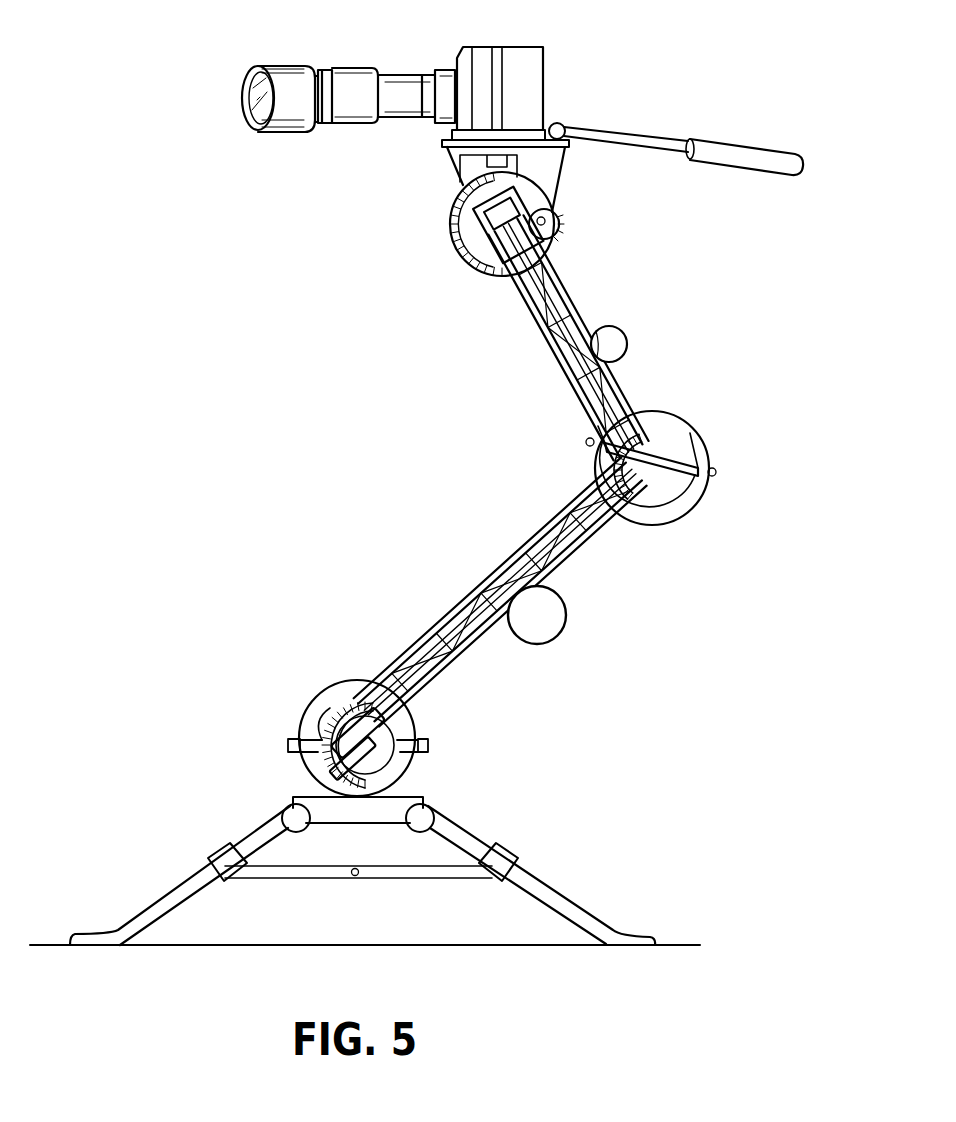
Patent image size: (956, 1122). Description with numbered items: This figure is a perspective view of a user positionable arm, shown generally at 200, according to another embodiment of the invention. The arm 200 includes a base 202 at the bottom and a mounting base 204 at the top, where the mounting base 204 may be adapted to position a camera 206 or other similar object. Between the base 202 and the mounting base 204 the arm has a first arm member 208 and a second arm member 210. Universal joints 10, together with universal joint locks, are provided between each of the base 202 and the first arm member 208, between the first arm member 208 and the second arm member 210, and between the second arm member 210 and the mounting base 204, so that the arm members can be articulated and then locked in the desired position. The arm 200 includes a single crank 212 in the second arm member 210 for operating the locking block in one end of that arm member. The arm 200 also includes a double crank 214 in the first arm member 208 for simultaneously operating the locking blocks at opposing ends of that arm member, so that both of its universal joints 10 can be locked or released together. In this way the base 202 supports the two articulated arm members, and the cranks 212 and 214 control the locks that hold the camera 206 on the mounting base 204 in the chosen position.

The arm 200 is at (252, 462).
The base 202 is at (505, 852).
The mounting base 204 is at (447, 148).
The camera 206 is at (528, 63).
The first arm member 208 is at (470, 595).
The second arm member 210 is at (553, 346).
The single crank 212 is at (617, 347).
The double crank 214 is at (563, 634).
The universal joint 10 is at (557, 217).